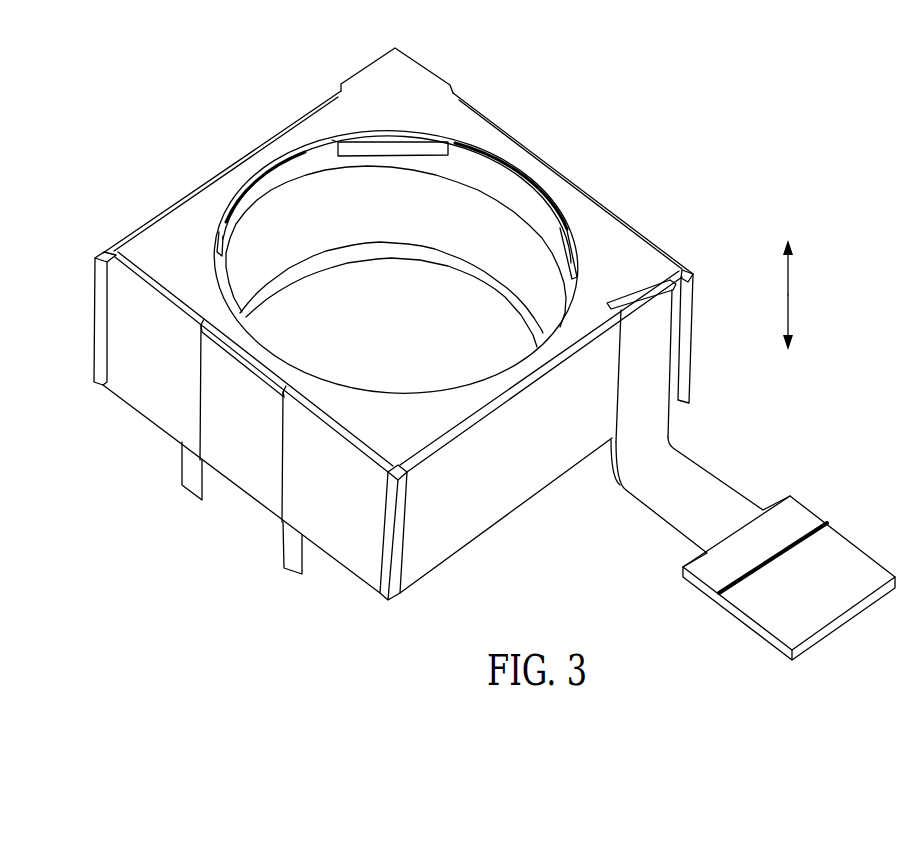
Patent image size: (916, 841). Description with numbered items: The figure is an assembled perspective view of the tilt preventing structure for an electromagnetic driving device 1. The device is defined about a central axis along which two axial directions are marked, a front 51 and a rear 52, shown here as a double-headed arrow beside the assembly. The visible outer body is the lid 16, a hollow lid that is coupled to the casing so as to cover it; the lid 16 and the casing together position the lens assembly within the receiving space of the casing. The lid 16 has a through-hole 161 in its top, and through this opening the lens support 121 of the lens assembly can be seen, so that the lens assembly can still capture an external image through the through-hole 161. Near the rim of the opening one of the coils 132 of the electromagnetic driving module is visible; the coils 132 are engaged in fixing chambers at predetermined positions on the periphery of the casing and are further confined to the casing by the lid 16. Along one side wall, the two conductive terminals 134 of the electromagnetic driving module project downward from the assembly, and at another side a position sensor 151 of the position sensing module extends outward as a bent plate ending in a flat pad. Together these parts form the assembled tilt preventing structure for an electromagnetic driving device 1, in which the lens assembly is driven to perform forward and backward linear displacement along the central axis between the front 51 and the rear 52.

The tilt preventing structure for an electromagnetic driving device 1 is at (204, 114).
The lid 16 is at (625, 240).
The through-hole 161 is at (563, 192).
The lens support 121 is at (490, 183).
The coils 132 is at (420, 150).
The conductive terminals 134 is at (293, 550).
The position sensor 151 is at (693, 477).
The front 51 is at (788, 268).
The rear 52 is at (788, 310).